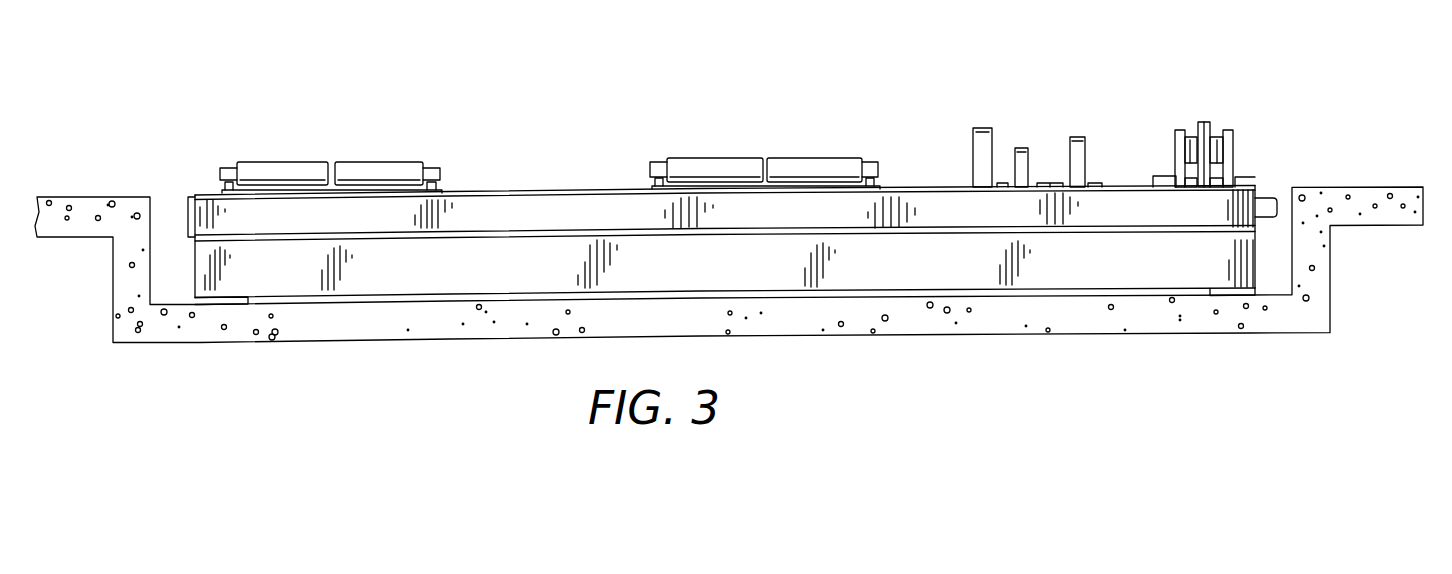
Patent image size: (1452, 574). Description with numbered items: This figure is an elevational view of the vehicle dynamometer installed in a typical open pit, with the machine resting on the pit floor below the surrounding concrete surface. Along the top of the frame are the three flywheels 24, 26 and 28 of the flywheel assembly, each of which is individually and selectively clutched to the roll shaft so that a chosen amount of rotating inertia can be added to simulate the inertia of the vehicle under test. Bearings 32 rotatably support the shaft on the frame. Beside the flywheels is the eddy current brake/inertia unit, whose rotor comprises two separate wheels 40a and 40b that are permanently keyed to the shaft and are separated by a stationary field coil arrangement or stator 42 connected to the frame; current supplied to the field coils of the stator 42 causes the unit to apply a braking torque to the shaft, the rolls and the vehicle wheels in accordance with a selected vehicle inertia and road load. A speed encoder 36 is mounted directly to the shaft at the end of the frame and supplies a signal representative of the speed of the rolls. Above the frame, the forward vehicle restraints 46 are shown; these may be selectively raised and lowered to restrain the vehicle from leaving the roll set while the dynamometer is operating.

The flywheel 24 is at (983, 128).
The flywheel 26 is at (1023, 148).
The flywheel 28 is at (1075, 137).
The bearings 32 is at (1163, 176).
The speed encoder 36 is at (1272, 197).
The rotor wheel 40a is at (1180, 130).
The rotor wheel 40b is at (1232, 130).
The stator 42 is at (1202, 122).
The forward vehicle restraints 46 is at (440, 143).